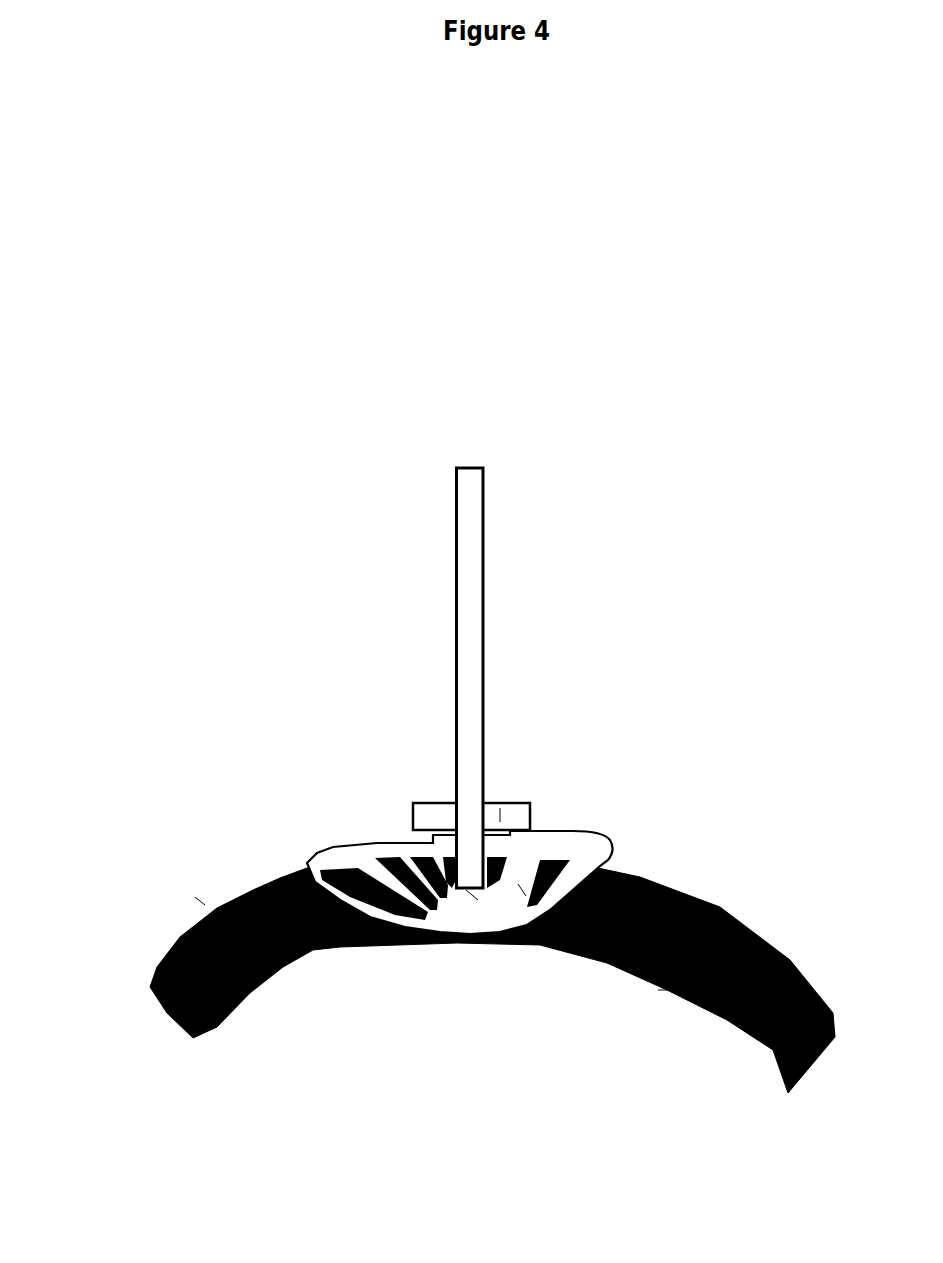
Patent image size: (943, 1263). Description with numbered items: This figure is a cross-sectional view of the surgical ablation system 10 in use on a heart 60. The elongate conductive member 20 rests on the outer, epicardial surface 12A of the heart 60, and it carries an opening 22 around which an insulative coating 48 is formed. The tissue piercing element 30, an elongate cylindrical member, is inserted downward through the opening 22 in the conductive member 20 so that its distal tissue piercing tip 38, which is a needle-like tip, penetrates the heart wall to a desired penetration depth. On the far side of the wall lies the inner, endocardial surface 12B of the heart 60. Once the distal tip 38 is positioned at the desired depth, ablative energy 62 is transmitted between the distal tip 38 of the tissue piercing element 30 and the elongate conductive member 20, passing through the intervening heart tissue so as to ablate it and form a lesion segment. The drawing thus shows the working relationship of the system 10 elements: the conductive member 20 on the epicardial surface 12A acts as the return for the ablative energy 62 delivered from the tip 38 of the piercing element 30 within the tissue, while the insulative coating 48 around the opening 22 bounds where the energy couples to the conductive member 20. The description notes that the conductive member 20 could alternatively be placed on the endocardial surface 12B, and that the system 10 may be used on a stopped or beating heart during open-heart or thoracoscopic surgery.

The surgical ablation system 10 is at (123, 265).
The outer epicardial surface 12A is at (198, 900).
The inner endocardial surface 12B is at (663, 988).
The elongate conductive member 20 is at (360, 848).
The opening 22 is at (495, 842).
The tissue piercing element 30 is at (466, 548).
The distal tissue piercing tip 38 is at (472, 895).
The insulative coating 48 is at (500, 815).
The heart 60 is at (718, 907).
The ablative energy 62 is at (522, 890).